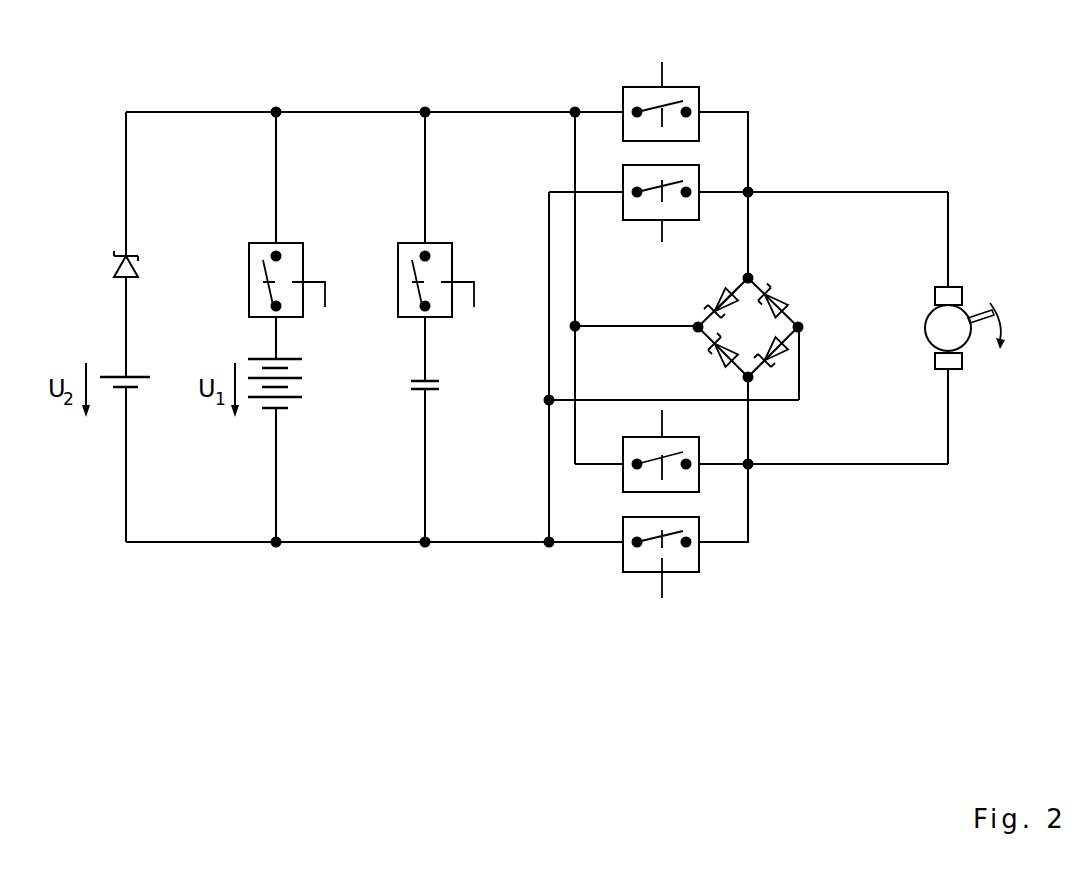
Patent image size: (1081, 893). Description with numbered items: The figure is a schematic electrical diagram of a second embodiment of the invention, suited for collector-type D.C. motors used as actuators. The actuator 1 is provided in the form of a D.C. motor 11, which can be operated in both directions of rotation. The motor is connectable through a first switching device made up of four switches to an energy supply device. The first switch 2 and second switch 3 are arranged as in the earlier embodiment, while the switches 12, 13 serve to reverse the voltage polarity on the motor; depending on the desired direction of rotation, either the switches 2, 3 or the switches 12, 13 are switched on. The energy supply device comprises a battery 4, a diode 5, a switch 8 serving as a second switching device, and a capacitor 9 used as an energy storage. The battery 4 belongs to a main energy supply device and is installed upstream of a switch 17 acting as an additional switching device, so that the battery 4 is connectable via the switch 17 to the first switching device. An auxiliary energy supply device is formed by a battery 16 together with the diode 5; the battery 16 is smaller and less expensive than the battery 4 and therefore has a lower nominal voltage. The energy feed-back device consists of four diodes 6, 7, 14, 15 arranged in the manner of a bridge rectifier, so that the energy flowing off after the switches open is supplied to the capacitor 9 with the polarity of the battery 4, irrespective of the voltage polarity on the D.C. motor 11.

The actuator 1 is at (985, 311).
The D.C. motor 11 is at (965, 307).
The first switch 2 is at (687, 87).
The second switch 3 is at (682, 572).
The battery 4 is at (288, 356).
The diode 5 is at (115, 270).
The diode 6 is at (787, 295).
The diode 7 is at (778, 353).
The switch 8 is at (397, 270).
The capacitor 9 is at (418, 388).
The switch 12 is at (622, 453).
The switch 13 is at (645, 220).
The diode 14 is at (716, 305).
The diode 15 is at (717, 355).
The battery 16 is at (120, 376).
The switch 17 is at (248, 268).